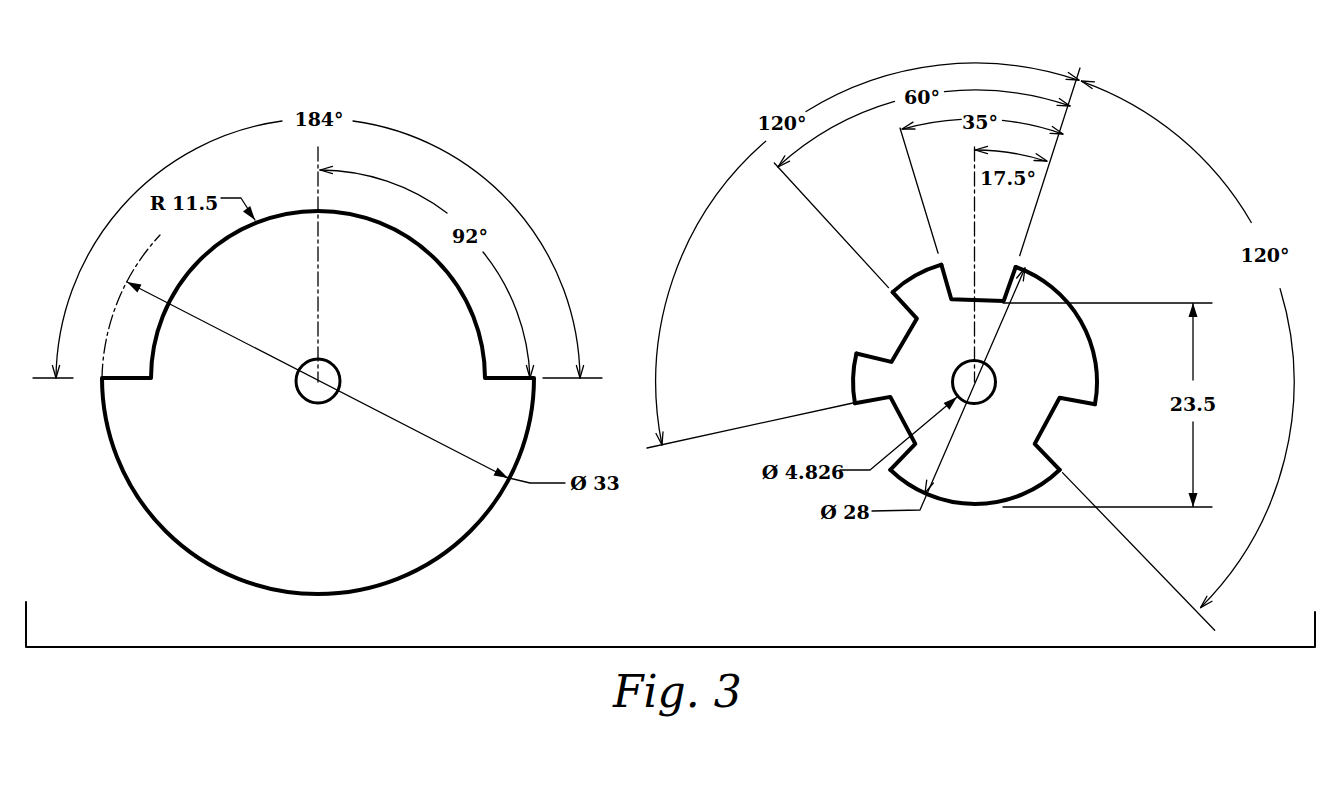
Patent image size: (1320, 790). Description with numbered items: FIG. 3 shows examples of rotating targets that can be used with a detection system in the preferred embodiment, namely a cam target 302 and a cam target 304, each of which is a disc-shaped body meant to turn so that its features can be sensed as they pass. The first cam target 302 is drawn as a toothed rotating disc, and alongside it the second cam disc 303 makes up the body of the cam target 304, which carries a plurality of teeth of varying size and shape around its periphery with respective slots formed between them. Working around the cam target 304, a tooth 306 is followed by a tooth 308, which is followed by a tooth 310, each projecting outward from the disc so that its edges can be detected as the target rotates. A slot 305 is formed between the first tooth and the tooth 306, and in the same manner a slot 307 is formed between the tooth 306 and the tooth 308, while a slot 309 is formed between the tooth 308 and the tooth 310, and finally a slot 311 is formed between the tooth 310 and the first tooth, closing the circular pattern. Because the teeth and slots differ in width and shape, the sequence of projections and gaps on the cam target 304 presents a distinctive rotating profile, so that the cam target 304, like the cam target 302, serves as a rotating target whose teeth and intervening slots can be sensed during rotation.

The cam target 302 is at (340, 528).
The second cam disc 303 is at (971, 362).
The cam target 304 is at (851, 375).
The slot 305 is at (875, 328).
The tooth 306 is at (908, 272).
The slot 307 is at (960, 256).
The tooth 308 is at (1095, 367).
The slot 309 is at (1065, 428).
The tooth 310 is at (983, 507).
The slot 311 is at (873, 438).